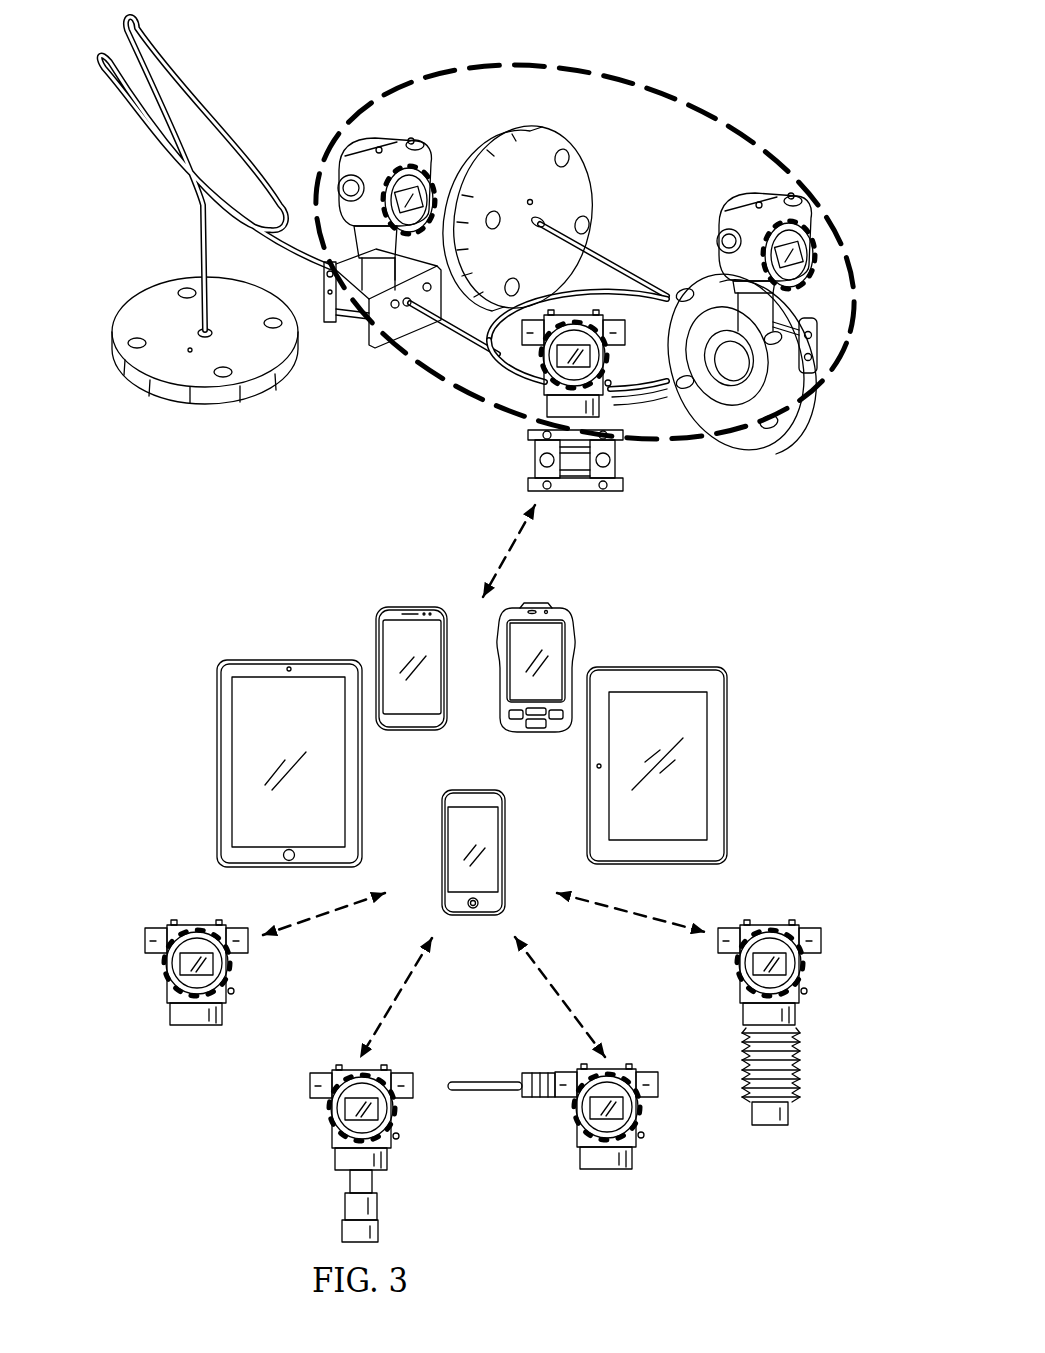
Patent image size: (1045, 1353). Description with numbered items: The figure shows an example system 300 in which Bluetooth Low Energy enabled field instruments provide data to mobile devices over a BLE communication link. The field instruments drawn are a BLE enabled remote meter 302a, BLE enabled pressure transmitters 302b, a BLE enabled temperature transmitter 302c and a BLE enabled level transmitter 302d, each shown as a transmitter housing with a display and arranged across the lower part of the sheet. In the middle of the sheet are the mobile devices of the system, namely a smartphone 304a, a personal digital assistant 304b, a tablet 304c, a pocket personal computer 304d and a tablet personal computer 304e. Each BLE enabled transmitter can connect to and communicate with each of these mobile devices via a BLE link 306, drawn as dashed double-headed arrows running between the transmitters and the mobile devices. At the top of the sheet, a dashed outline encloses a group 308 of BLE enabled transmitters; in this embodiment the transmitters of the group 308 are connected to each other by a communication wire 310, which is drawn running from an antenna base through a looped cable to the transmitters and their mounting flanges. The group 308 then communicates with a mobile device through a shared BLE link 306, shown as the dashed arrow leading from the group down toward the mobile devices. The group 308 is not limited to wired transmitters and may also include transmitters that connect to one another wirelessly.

The system 300 is at (501, 621).
The BLE enabled remote meter 302a is at (197, 1029).
The BLE enabled pressure transmitter 302b is at (333, 1160).
The BLE enabled temperature transmitter 302c is at (607, 1171).
The BLE enabled level transmitter 302d is at (770, 1128).
The smartphone 304a is at (410, 731).
The personal digital assistant (PDA) 304b is at (535, 733).
The tablet 304c is at (216, 761).
The pocket personal computer 304d is at (470, 789).
The tablet personal computer 304e is at (727, 767).
The BLE link 306 is at (517, 541).
The group of BLE enabled transmitters 308 is at (681, 91).
The communication wire 310 is at (245, 137).